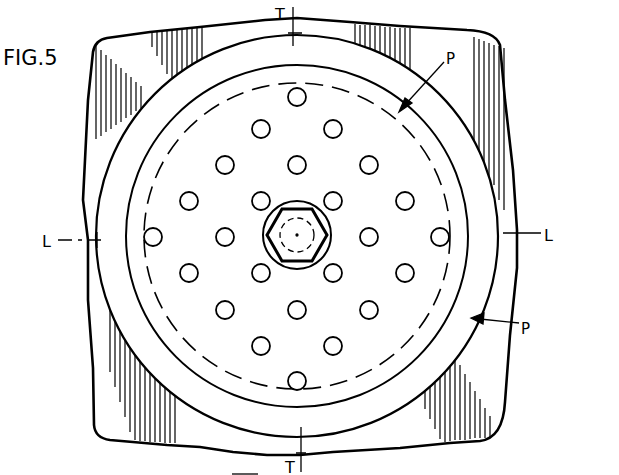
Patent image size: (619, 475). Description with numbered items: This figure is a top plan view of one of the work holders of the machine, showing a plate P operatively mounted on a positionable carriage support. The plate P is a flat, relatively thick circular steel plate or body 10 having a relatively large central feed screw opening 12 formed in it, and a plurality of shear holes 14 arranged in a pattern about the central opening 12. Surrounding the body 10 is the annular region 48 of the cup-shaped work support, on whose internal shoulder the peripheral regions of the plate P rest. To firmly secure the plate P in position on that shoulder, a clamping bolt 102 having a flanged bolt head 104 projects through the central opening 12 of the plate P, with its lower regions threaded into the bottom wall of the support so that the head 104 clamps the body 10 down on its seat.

The circular steel plate or body 10 is at (432, 152).
The central feed screw opening 12 is at (303, 215).
The shear holes 14 is at (402, 192).
The annular rim 48 is at (470, 180).
The clamping bolt 102 is at (318, 247).
The flanged bolt head 104 is at (247, 473).